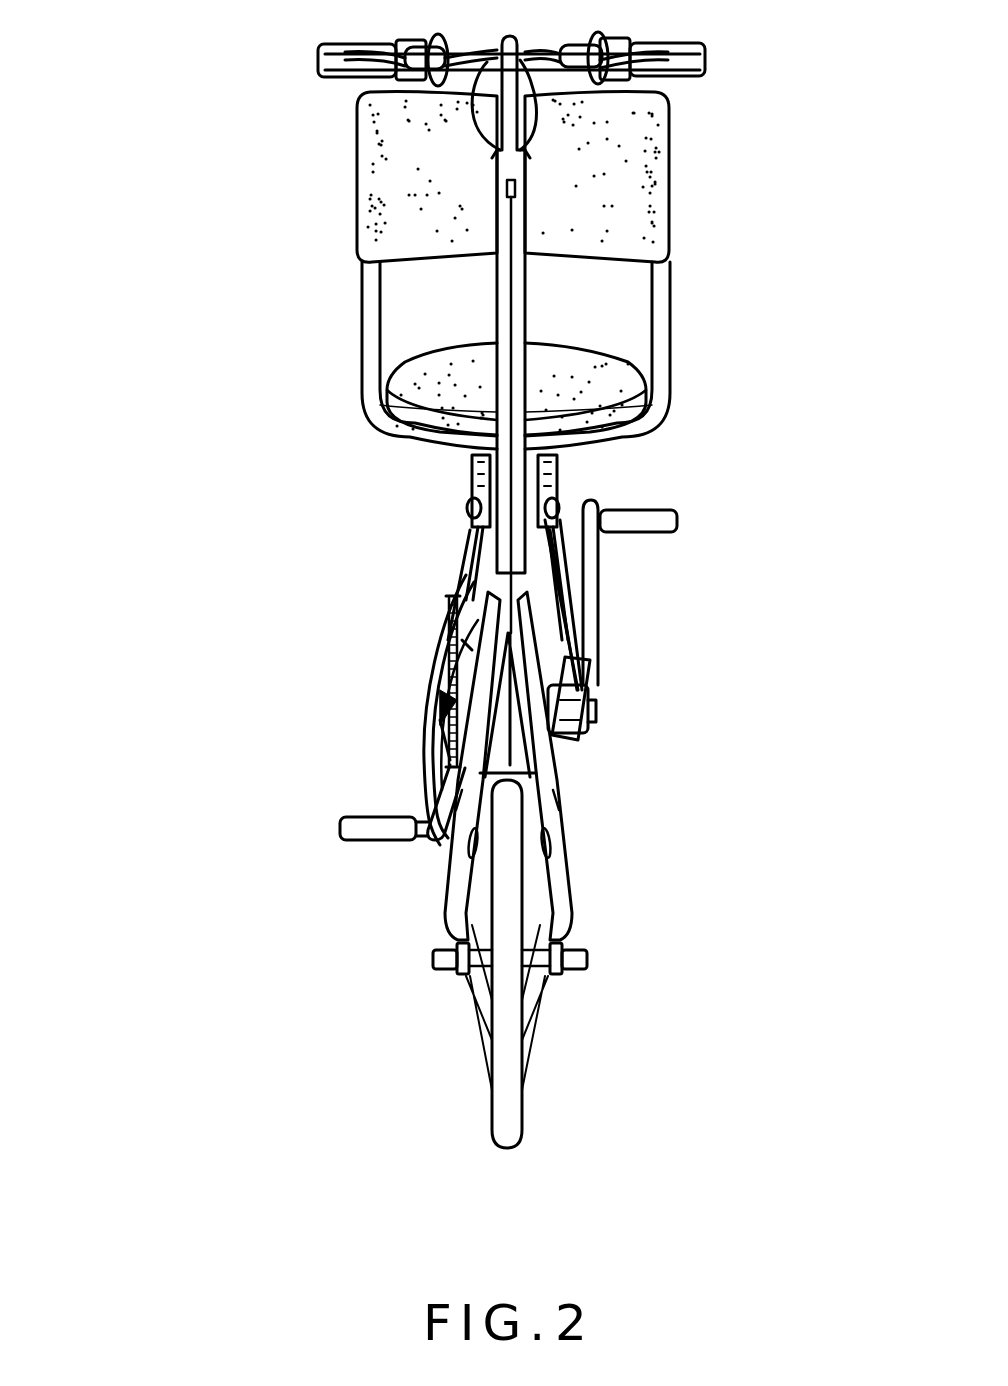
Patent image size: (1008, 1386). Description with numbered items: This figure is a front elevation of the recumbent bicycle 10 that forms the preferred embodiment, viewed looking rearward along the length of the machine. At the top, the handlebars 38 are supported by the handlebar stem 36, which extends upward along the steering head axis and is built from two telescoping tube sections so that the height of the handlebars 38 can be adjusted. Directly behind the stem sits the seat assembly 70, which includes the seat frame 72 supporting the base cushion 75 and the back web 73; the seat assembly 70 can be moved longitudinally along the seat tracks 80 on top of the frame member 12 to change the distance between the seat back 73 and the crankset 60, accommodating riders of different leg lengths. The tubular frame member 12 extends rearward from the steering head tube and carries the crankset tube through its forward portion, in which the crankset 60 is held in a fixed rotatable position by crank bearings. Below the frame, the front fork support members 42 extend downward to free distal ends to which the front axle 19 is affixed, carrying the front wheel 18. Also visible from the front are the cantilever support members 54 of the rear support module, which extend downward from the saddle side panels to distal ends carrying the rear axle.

The recumbent bicycle 10 is at (240, 188).
The frame member 12 is at (490, 540).
The front wheel 18 is at (505, 1122).
The front axle 19 is at (593, 955).
The handlebar stem 36 is at (503, 320).
The handlebars 38 is at (700, 60).
The support members 42 is at (453, 878).
The cantilever support members 54 is at (472, 578).
The crankset 60 is at (430, 693).
The seat assembly 70 is at (690, 158).
The seat frame 72 is at (655, 318).
The back web 73 is at (607, 232).
The base cushion 75 is at (570, 375).
The seat tracks 80 is at (475, 482).